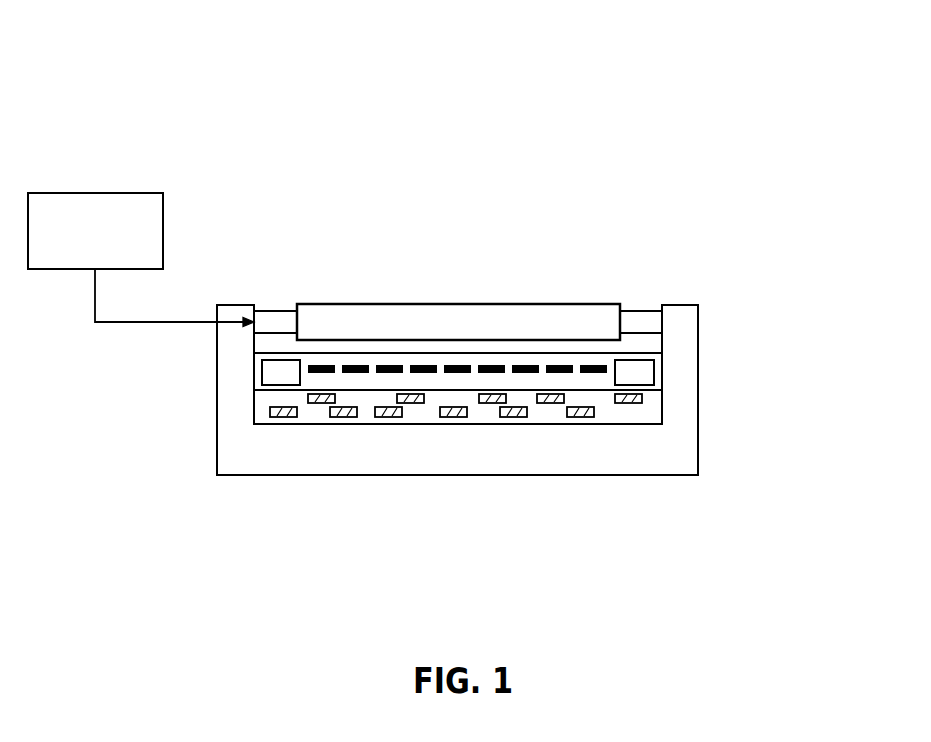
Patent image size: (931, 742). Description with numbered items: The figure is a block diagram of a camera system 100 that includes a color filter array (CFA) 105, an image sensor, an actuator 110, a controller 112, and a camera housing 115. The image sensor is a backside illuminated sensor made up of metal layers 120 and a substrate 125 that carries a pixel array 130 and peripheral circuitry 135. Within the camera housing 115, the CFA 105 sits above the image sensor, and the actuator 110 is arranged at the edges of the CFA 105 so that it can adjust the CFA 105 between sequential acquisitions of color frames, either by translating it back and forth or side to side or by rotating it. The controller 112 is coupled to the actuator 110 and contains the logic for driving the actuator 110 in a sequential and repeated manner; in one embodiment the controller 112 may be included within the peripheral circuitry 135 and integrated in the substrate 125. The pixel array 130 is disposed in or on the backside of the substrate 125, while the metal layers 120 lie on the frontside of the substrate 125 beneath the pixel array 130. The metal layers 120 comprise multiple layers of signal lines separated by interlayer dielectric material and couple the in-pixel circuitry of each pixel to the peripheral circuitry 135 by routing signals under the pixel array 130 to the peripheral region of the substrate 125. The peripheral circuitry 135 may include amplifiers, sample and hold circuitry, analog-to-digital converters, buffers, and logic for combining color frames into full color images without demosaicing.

The camera system 100 is at (733, 93).
The color filter array 105 is at (458, 322).
The actuator 110 is at (278, 310).
The controller 112 is at (108, 254).
The camera housing 115 is at (568, 462).
The metal layers 120 is at (672, 407).
The substrate 125 is at (672, 368).
The pixel array 130 is at (469, 352).
The peripheral circuitry 135 is at (262, 373).